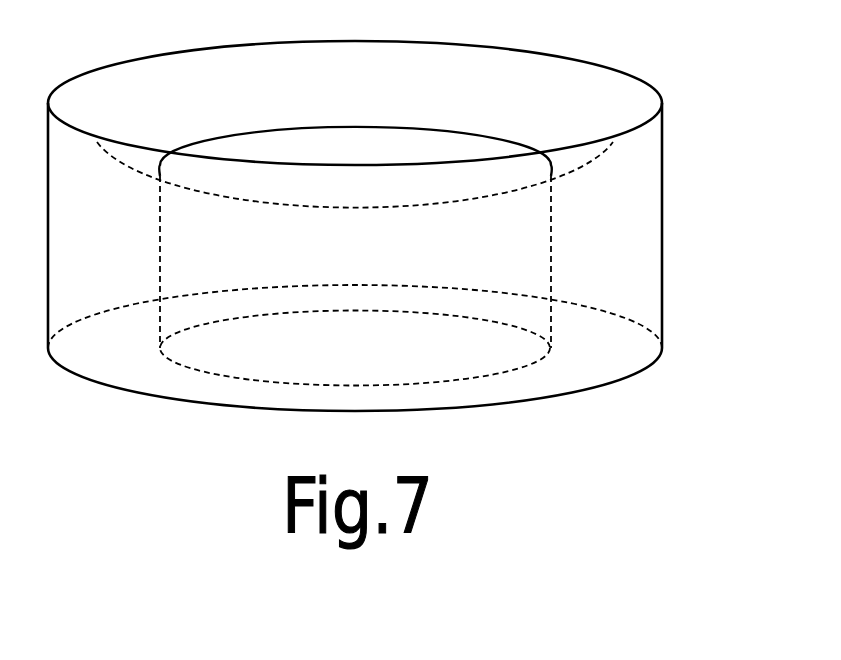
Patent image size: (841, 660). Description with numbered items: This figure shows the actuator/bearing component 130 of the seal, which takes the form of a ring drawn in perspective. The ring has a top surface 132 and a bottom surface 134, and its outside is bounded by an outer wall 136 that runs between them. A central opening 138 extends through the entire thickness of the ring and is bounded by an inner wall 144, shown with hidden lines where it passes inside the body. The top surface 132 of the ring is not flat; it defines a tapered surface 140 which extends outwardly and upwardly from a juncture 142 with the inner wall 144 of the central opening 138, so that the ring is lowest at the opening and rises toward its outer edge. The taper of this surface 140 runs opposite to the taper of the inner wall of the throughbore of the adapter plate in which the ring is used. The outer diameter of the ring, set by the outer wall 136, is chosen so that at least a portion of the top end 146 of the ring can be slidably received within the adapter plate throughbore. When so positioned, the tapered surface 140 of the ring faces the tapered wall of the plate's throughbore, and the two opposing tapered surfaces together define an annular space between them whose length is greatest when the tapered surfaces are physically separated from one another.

The actuator/bearing component 130 is at (412, 223).
The top surface 132 is at (646, 98).
The bottom surface 134 is at (610, 387).
The outer wall 136 is at (663, 308).
The central opening 138 is at (413, 148).
The tapered surface 140 is at (572, 108).
The juncture 142 is at (423, 207).
The inner wall 144 is at (550, 246).
The top end 146 is at (663, 148).